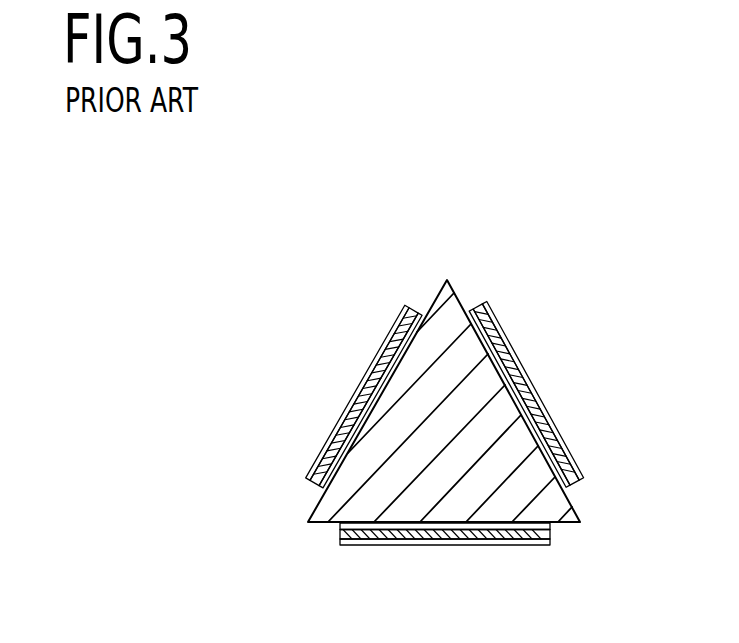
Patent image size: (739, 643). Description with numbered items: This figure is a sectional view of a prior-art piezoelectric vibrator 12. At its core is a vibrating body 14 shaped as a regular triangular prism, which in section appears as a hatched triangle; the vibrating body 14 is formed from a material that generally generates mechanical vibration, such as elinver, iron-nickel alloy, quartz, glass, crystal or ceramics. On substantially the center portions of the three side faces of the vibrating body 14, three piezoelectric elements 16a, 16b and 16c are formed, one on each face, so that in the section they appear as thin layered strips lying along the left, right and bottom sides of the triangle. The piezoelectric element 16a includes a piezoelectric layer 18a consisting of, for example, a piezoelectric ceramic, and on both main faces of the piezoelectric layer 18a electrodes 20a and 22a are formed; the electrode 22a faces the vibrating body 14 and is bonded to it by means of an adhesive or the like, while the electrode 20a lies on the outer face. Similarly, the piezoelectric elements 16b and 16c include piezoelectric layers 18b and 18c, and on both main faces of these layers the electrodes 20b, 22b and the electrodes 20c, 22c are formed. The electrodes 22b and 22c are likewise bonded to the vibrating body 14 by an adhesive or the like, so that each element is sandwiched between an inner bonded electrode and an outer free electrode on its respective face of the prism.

The piezoelectric vibrator 12 is at (213, 198).
The vibrating body 14 is at (553, 505).
The piezoelectric element 16a is at (391, 326).
The piezoelectric element 16b is at (492, 290).
The piezoelectric element 16c is at (528, 568).
The piezoelectric layer 18a is at (343, 413).
The piezoelectric layer 18b is at (531, 398).
The piezoelectric layer 18c is at (393, 545).
The electrode 20a is at (372, 362).
The electrode 20b is at (504, 352).
The electrode 20c is at (357, 545).
The electrode 22a is at (320, 468).
The electrode 22b is at (557, 433).
The electrode 22c is at (472, 545).